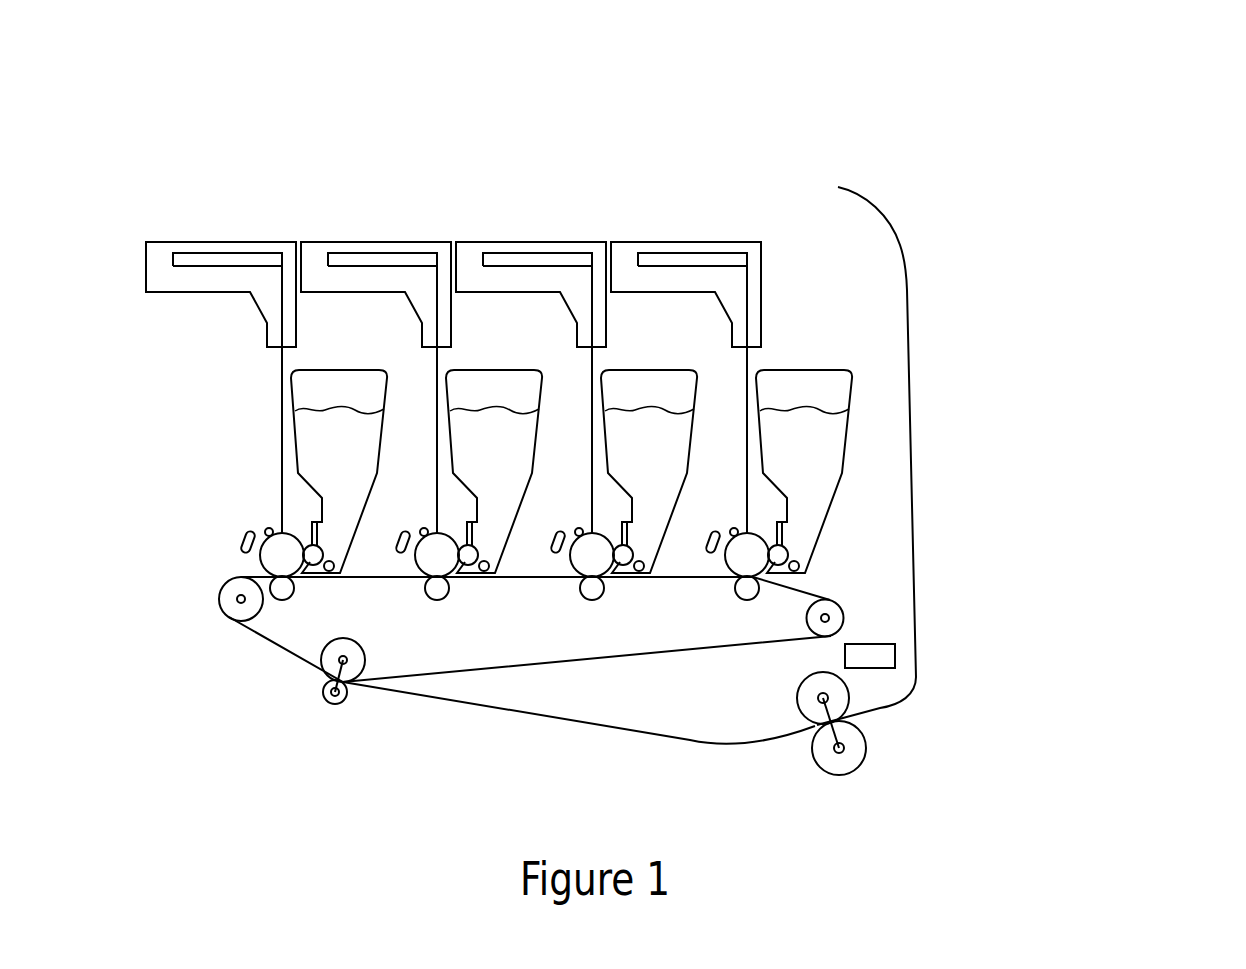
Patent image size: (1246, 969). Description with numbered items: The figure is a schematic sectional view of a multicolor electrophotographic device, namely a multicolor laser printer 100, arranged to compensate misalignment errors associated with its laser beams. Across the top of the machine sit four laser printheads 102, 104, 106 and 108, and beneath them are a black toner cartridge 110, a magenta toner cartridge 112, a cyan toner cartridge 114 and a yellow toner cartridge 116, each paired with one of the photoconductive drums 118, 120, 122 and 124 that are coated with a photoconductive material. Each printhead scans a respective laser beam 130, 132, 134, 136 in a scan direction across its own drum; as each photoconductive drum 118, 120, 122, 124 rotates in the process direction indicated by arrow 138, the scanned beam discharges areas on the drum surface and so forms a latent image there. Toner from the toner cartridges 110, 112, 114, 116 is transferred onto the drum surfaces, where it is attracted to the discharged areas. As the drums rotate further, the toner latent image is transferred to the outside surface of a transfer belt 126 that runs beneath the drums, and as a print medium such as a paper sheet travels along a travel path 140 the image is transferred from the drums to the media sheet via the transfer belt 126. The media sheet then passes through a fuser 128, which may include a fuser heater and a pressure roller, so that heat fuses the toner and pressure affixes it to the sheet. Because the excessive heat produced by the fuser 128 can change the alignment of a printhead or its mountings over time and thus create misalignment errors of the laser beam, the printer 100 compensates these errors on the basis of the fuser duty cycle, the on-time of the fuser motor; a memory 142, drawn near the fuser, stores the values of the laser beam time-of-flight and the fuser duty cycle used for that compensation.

The multicolor laser printer 100 is at (1078, 101).
The laser printhead 102 is at (219, 242).
The laser printhead 104 is at (374, 242).
The laser printhead 106 is at (529, 242).
The laser printhead 108 is at (684, 242).
The black toner cartridge 110 is at (337, 369).
The magenta toner cartridge 112 is at (492, 369).
The cyan toner cartridge 114 is at (647, 369).
The yellow toner cartridge 116 is at (802, 369).
The photoconductive drum 118 is at (289, 569).
The photoconductive drum 120 is at (444, 569).
The photoconductive drum 122 is at (599, 569).
The photoconductive drum 124 is at (755, 569).
The transfer belt 126 is at (617, 657).
The fuser 128 is at (787, 718).
The laser beam 130 is at (279, 439).
The laser beam 132 is at (434, 439).
The laser beam 134 is at (589, 439).
The laser beam 136 is at (744, 439).
The arrow 138 is at (257, 518).
The travel path 140 is at (309, 683).
The memory 142 is at (854, 644).